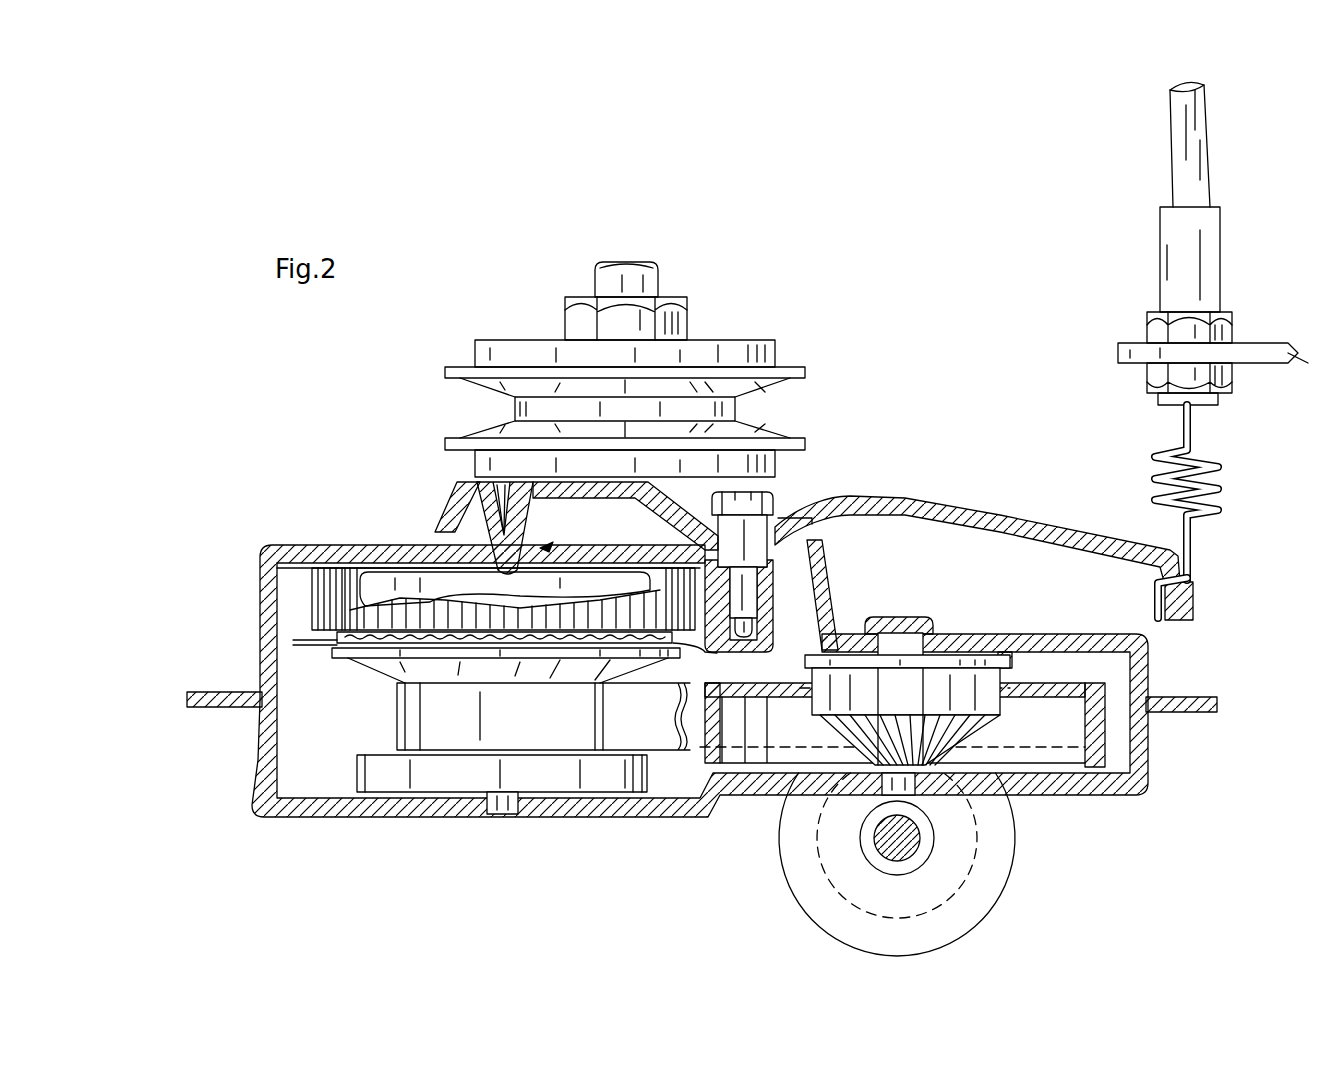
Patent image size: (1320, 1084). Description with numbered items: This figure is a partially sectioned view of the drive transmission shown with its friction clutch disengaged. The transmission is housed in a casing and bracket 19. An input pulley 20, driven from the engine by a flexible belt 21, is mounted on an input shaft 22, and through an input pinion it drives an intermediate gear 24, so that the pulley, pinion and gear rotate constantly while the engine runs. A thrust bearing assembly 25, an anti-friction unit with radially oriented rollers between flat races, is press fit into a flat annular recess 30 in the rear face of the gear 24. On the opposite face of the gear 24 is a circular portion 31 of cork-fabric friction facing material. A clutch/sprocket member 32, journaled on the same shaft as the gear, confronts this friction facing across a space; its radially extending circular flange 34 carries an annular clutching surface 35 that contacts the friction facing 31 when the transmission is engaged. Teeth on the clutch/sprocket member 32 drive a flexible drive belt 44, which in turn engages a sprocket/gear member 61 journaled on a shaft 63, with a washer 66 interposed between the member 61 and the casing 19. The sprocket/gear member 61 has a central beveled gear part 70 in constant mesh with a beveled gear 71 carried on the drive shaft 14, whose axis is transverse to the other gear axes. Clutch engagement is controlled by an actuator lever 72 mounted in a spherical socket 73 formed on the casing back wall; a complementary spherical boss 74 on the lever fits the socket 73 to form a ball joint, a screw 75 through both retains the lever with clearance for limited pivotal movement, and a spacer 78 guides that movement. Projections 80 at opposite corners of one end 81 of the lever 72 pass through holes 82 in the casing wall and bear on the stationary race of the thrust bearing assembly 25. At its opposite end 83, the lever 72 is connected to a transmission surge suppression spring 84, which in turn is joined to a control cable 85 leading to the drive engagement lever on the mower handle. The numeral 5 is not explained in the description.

The bearing lip 5 is at (699, 659).
The drive shaft 14 is at (885, 848).
The casing and bracket 19 is at (288, 545).
The input pulley 20 is at (760, 360).
The flexible belt 21 is at (748, 413).
The input shaft 22 is at (628, 262).
The intermediate gear 24 is at (333, 580).
The thrust bearing assembly 25 is at (425, 600).
The annular recess 30 is at (360, 590).
The circular portion of friction facing material 31 is at (300, 642).
The clutch/sprocket member 32 is at (395, 673).
The circular flange 34 is at (340, 651).
The annular clutching surface 35 is at (300, 640).
The flexible drive belt 44 is at (650, 735).
The sprocket/gear member 61 is at (1095, 770).
The shaft 63 is at (905, 635).
The washer 66 is at (960, 657).
The beveled gear part 70 is at (985, 735).
The beveled gear 71 is at (985, 873).
The actuator lever 72 is at (935, 498).
The spherical socket 73 is at (790, 553).
The spherical boss 74 is at (830, 520).
The screw 75 is at (770, 500).
The spacer 78 is at (800, 512).
The projections 80 is at (530, 524).
The end of the actuator lever 81 is at (460, 500).
The holes 82 is at (545, 548).
The end of the lever 83 is at (1168, 560).
The transmission surge suppression spring 84 is at (1222, 485).
The control cable 85 is at (1195, 155).